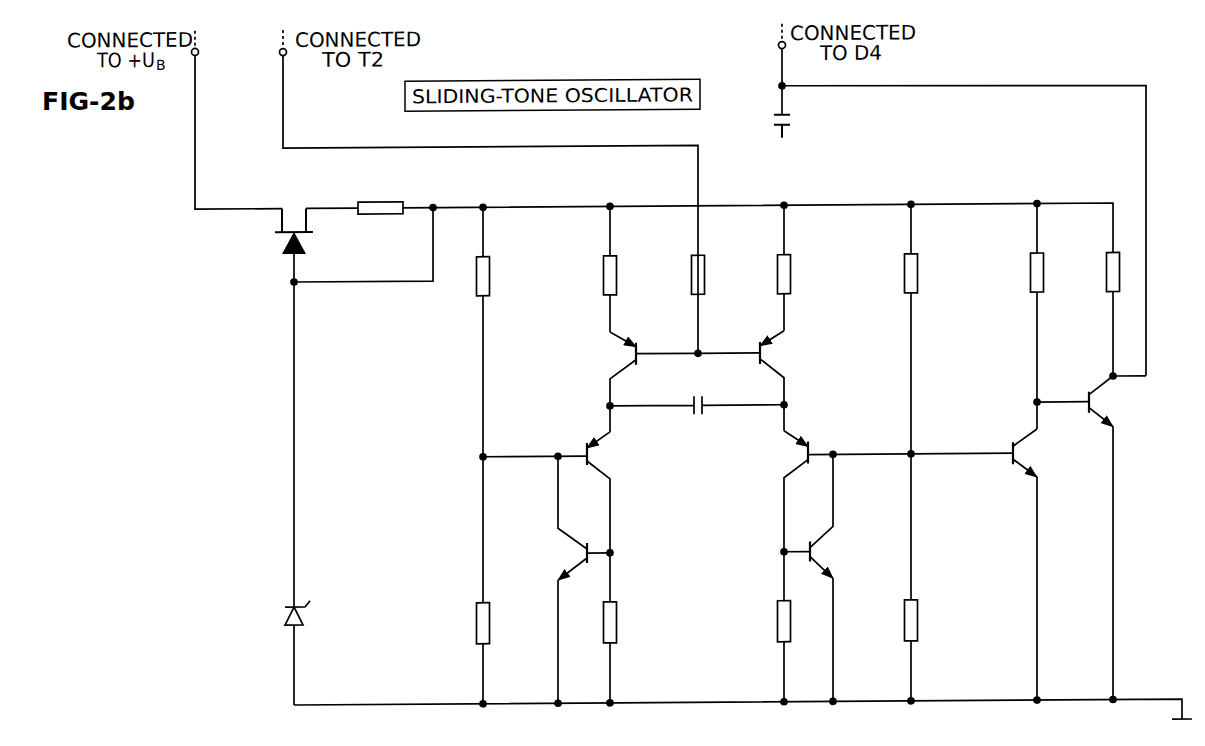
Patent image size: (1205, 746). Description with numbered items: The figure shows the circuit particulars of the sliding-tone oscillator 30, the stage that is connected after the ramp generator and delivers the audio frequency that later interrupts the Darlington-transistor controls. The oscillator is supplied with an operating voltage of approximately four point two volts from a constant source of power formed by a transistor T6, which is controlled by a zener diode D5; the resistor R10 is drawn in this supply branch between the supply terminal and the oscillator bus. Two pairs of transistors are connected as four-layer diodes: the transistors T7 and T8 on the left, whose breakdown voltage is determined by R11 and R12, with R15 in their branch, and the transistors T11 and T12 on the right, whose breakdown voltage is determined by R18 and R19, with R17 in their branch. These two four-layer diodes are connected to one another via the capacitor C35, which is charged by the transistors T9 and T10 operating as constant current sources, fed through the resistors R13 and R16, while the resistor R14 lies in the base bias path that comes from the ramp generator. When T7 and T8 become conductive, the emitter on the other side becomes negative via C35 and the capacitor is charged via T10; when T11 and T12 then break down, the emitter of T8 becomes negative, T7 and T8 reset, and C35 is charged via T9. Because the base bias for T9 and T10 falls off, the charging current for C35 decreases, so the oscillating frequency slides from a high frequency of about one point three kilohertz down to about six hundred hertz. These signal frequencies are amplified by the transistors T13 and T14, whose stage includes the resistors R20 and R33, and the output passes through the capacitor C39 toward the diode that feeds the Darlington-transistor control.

The sliding-tone oscillator 30 is at (713, 552).
The transistor T6 is at (294, 231).
The transistor T7 is at (576, 579).
The transistor T8 is at (555, 480).
The transistor T9 is at (642, 368).
The transistor T10 is at (755, 368).
The transistor T11 is at (885, 477).
The transistor T12 is at (825, 578).
The transistor T13 is at (1040, 564).
The transistor T14 is at (1091, 538).
The resistor R10 is at (380, 196).
The resistor R11 is at (505, 332).
The resistor R12 is at (506, 579).
The resistor R13 is at (632, 269).
The resistor R14 is at (721, 274).
The resistor R15 is at (634, 628).
The resistor R16 is at (807, 268).
The resistor R17 is at (764, 627).
The resistor R18 is at (933, 329).
The resistor R19 is at (934, 577).
The resistor R20 is at (1060, 316).
The resistor R33 is at (1091, 298).
The capacitor C35 is at (697, 421).
The capacitor C39 is at (759, 124).
The zener diode D5 is at (315, 653).